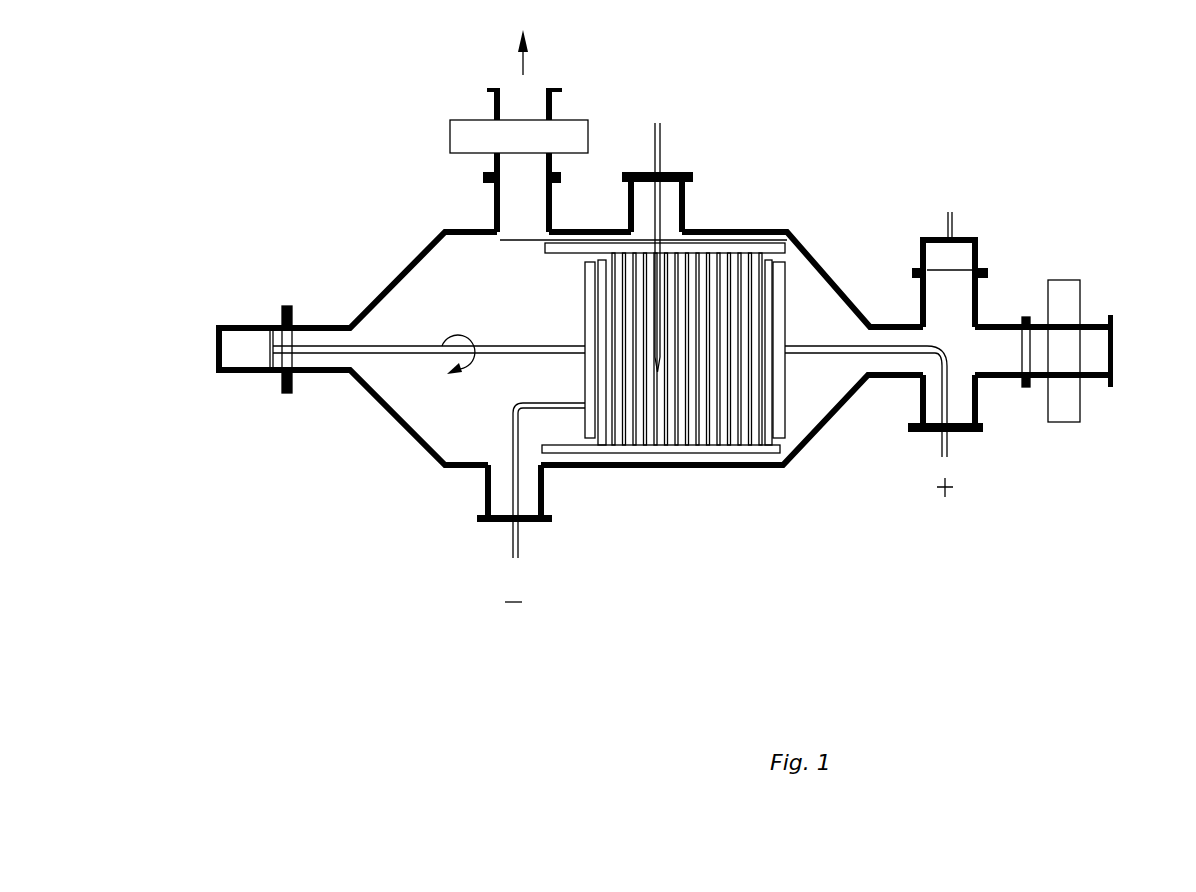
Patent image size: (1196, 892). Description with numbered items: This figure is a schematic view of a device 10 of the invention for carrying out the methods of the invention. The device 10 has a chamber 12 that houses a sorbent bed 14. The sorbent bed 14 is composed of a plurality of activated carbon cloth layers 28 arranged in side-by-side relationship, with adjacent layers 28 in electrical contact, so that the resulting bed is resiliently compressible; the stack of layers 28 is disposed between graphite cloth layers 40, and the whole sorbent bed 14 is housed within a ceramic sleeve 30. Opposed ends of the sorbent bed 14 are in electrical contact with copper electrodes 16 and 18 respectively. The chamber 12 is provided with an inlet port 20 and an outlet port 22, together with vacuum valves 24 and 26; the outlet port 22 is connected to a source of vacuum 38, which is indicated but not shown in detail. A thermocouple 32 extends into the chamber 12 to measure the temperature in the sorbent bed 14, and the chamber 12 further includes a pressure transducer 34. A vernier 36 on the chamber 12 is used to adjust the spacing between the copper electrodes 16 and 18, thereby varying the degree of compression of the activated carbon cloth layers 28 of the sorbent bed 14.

The device 10 is at (386, 254).
The chamber 12 is at (400, 430).
The sorbent bed 14 is at (688, 440).
The copper electrode 16 is at (588, 278).
The copper electrode 18 is at (787, 303).
The inlet port 20 is at (1098, 363).
The outlet port 22 is at (505, 95).
The vacuum valve 24 is at (1066, 300).
The vacuum valve 26 is at (450, 135).
The activated carbon cloth layers 28 is at (745, 283).
The ceramic sleeve 30 is at (628, 450).
The thermocouple 32 is at (656, 148).
The pressure transducer 34 is at (965, 252).
The vernier 36 is at (242, 374).
The source of vacuum 38 is at (527, 63).
The graphite cloth layers 40 is at (778, 397).